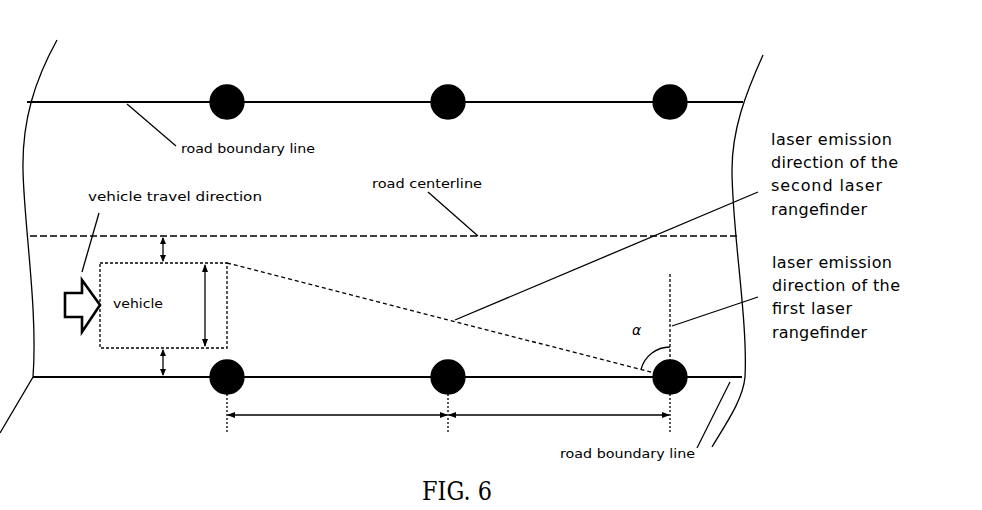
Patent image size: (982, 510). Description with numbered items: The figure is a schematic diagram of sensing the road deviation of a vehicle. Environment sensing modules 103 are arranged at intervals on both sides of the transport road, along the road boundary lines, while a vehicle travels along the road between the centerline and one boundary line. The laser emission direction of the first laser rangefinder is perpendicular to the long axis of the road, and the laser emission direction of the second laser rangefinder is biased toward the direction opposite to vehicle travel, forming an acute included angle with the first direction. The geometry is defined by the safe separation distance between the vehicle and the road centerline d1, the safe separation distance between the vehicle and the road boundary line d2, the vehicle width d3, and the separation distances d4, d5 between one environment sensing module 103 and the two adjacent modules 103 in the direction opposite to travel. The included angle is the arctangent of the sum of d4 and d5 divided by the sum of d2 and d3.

The environment sensing module 103 is at (656, 88).
The safe separation distance between the vehicle and the road centerline d1 is at (151, 249).
The safe separation distance between the vehicle and the road boundary line d2 is at (151, 362).
The vehicle width d3 is at (192, 305).
The separation distance between environment sensing module and first adjacent module d4 is at (559, 403).
The separation distance between environment sensing module and second adjacent modul d5 is at (337, 403).